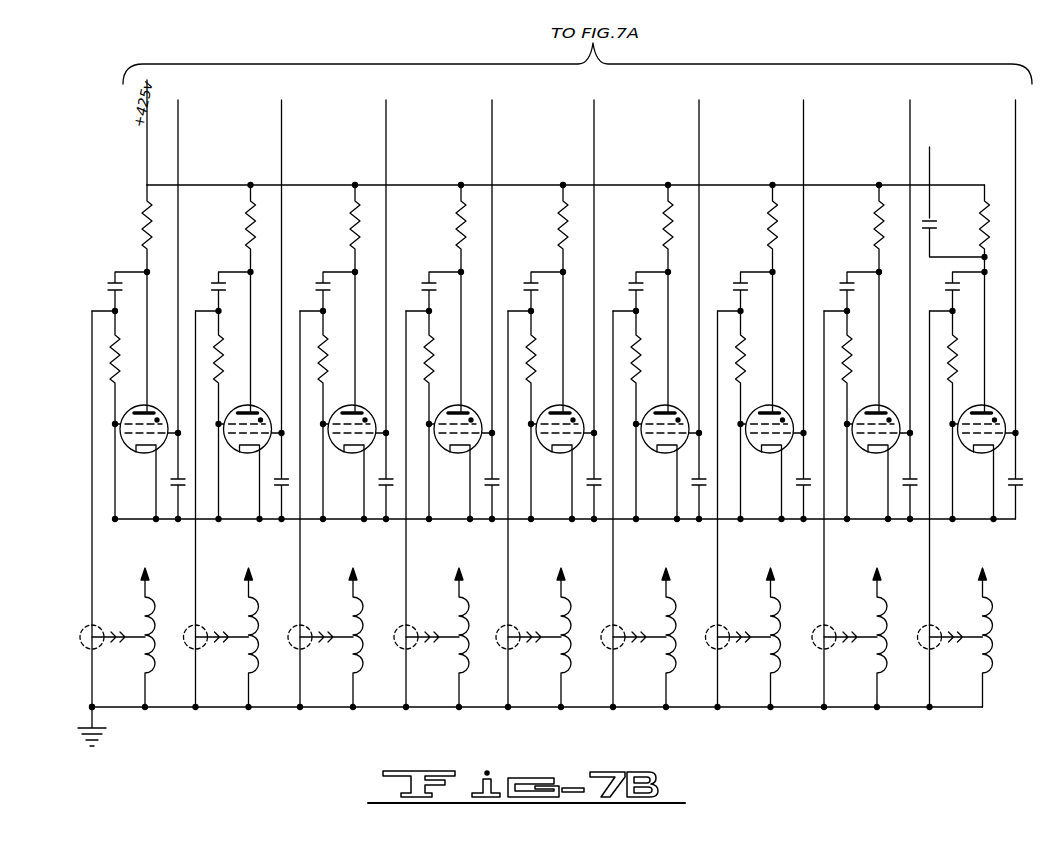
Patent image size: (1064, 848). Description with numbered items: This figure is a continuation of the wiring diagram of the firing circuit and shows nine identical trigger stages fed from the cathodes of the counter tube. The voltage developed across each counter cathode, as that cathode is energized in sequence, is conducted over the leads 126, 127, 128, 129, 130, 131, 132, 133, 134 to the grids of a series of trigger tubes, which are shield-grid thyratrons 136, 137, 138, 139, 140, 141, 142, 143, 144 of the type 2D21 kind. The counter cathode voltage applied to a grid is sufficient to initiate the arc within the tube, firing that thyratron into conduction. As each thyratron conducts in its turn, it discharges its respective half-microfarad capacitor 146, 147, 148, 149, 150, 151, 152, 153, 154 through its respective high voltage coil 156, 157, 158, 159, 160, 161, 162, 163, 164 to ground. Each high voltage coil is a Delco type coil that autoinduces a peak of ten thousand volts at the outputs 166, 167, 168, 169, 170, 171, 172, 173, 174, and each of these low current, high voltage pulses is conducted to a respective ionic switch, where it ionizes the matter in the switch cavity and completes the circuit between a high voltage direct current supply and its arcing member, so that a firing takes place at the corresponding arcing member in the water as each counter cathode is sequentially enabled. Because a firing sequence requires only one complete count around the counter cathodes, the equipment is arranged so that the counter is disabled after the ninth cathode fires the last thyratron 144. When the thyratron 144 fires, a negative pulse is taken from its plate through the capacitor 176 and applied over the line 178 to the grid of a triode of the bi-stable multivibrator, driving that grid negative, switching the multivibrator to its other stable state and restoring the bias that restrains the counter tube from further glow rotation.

The lead 126 is at (191, 311).
The lead 127 is at (295, 311).
The lead 128 is at (399, 311).
The lead 129 is at (505, 311).
The lead 130 is at (607, 311).
The lead 131 is at (712, 311).
The lead 132 is at (817, 311).
The lead 133 is at (923, 311).
The lead 134 is at (1029, 309).
The trigger tube 136 is at (149, 451).
The trigger tube 137 is at (253, 451).
The trigger tube 138 is at (357, 451).
The trigger tube 139 is at (463, 451).
The trigger tube 140 is at (565, 451).
The trigger tube 141 is at (670, 451).
The trigger tube 142 is at (775, 451).
The trigger tube 143 is at (881, 451).
The trigger tube 144 is at (987, 451).
The capacitor 146 is at (114, 292).
The capacitor 147 is at (218, 292).
The capacitor 148 is at (322, 292).
The capacitor 149 is at (428, 292).
The capacitor 150 is at (530, 292).
The capacitor 151 is at (635, 292).
The capacitor 152 is at (740, 292).
The capacitor 153 is at (846, 292).
The capacitor 154 is at (952, 292).
The high voltage coil 156 is at (129, 645).
The high voltage coil 157 is at (233, 645).
The high voltage coil 158 is at (337, 645).
The high voltage coil 159 is at (443, 645).
The high voltage coil 160 is at (545, 645).
The high voltage coil 161 is at (650, 645).
The high voltage coil 162 is at (755, 645).
The high voltage coil 163 is at (861, 645).
The high voltage coil 164 is at (967, 643).
The output 166 is at (144, 564).
The output 167 is at (248, 564).
The output 168 is at (352, 564).
The output 169 is at (458, 564).
The output 170 is at (560, 564).
The output 171 is at (665, 564).
The output 172 is at (770, 564).
The output 173 is at (876, 564).
The output 174 is at (982, 564).
The capacitor 176 is at (955, 229).
The line 178 is at (948, 182).